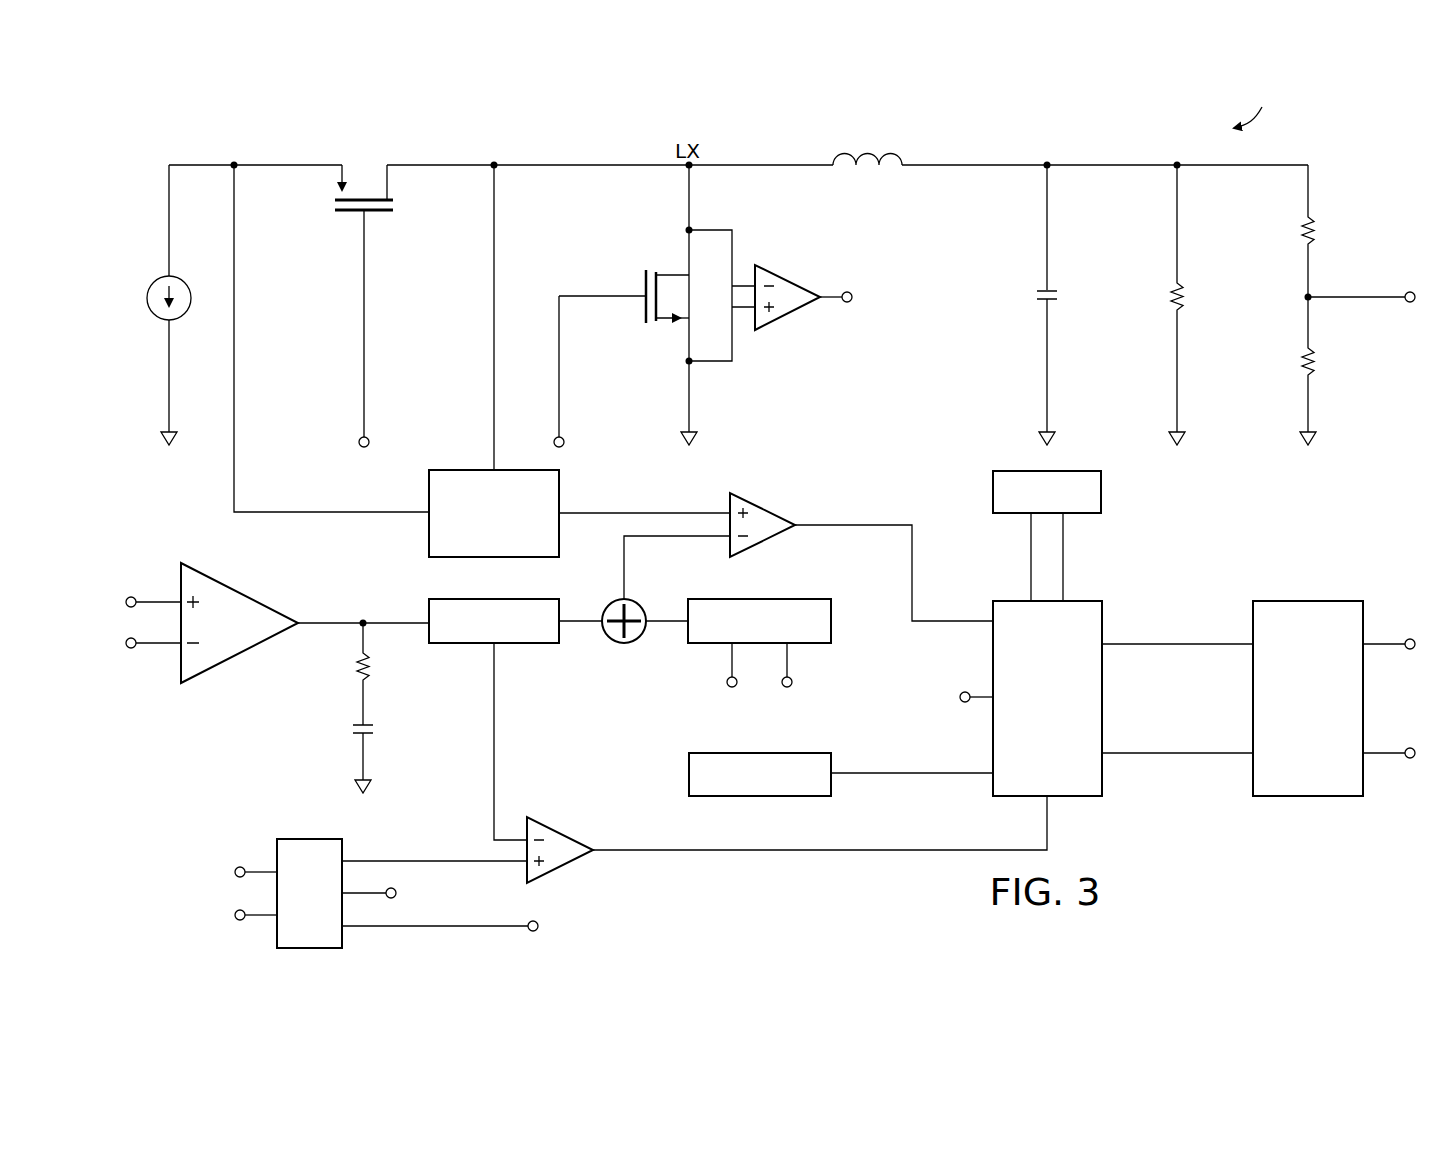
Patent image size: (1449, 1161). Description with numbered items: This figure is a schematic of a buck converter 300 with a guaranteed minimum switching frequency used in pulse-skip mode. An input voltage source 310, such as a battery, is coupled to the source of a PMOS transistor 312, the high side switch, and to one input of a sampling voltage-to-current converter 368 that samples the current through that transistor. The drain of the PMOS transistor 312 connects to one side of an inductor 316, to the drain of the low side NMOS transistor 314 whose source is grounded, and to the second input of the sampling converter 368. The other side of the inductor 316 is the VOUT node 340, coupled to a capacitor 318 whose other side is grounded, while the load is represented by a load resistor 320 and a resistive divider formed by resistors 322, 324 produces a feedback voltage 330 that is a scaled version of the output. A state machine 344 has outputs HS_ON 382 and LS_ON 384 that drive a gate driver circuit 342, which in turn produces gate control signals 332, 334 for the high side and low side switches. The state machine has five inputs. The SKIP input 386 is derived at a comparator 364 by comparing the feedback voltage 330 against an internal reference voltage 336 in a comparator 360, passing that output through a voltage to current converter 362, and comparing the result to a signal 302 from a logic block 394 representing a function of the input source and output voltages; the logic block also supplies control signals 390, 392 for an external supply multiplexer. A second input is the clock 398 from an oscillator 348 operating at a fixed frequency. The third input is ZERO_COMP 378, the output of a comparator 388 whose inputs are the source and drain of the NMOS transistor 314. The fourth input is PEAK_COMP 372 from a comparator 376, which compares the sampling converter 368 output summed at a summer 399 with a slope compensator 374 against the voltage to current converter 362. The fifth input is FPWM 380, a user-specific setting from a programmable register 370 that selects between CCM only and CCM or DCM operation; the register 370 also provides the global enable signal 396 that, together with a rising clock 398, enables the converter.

The buck converter 300 is at (1262, 101).
The signal 302 is at (461, 859).
The input voltage source 310 is at (152, 282).
The PMOS transistor 312 is at (360, 214).
The NMOS transistor 314 is at (644, 283).
The inductor 316 is at (869, 148).
The capacitor 318 is at (1058, 296).
The load resistor 320 is at (1183, 297).
The upper feedback resistor 322 is at (1314, 231).
The lower feedback resistor 324 is at (1314, 362).
The feedback voltage 330 is at (1356, 296).
The gate control signal 332 is at (362, 426).
The gate control signal 334 is at (559, 427).
The internal reference voltage 336 is at (156, 598).
The VOUT node 340 is at (1050, 158).
The gate driver circuit 342 is at (1298, 800).
The state machine 344 is at (1075, 800).
The oscillator 348 is at (688, 776).
The comparator 360 is at (305, 678).
The voltage to current converter 362 is at (462, 647).
The comparator 364 is at (560, 829).
The sampling voltage-to-current converter 368 is at (460, 468).
The programmable register 370 is at (1102, 492).
The PEAK_COMP 372 is at (852, 529).
The slope compensator 374 is at (833, 631).
The comparator 376 is at (768, 510).
The ZERO_COMP 378 is at (841, 303).
The FPWM 380 is at (1030, 557).
The HS_ON 382 is at (1172, 650).
The LS_ON 384 is at (1172, 759).
The SKIP input 386 is at (820, 853).
The comparator 388 is at (790, 282).
The control signal 390 is at (366, 890).
The control signal 392 is at (484, 923).
The logic block 394 is at (308, 838).
The global enable signal 396 is at (1064, 557).
The clock 398 is at (908, 777).
The summer 399 is at (613, 640).